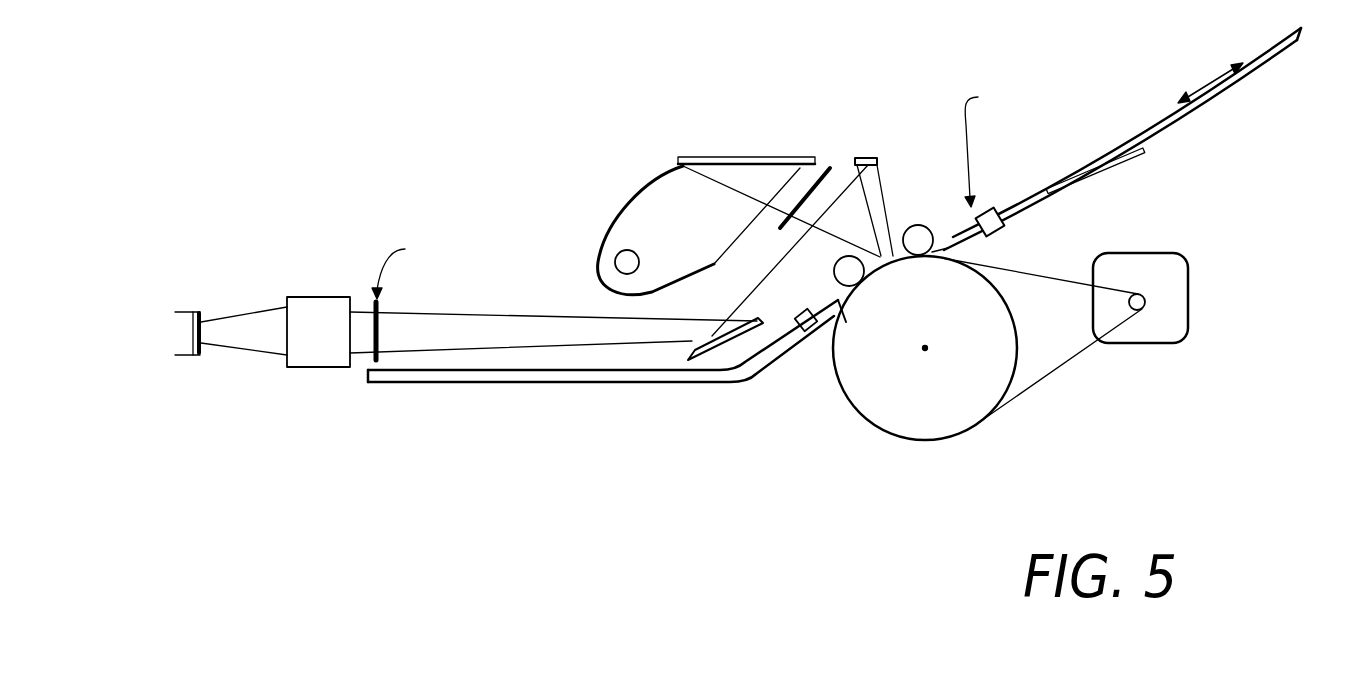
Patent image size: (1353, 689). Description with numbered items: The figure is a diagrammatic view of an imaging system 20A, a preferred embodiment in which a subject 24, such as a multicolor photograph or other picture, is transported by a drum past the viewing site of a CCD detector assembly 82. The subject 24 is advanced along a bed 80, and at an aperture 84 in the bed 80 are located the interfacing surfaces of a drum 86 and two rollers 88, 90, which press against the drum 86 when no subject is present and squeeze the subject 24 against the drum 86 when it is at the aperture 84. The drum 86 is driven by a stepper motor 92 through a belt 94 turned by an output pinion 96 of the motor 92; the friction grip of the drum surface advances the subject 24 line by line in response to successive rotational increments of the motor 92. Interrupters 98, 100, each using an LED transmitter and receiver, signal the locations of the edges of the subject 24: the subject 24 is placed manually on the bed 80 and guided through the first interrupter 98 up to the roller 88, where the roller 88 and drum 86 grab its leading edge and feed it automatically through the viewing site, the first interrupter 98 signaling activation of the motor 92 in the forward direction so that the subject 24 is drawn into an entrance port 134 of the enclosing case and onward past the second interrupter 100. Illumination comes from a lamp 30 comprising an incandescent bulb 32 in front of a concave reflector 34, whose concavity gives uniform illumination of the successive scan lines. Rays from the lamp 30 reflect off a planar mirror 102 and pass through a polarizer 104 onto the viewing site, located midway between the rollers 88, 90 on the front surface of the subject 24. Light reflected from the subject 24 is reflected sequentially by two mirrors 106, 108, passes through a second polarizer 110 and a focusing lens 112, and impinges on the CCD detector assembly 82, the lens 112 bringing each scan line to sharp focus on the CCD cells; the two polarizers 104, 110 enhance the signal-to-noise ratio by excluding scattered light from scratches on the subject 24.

The imaging system 20A is at (549, 167).
The subject 24 is at (1123, 146).
The lamp 30 is at (625, 230).
The incandescent bulb 32 is at (606, 239).
The concave reflector 34 is at (640, 193).
The bed 80 is at (598, 383).
The CCD detector assembly 82 is at (196, 357).
The aperture 84 is at (950, 246).
The drum 86 is at (1020, 347).
The roller 88 is at (930, 226).
The roller 90 is at (836, 276).
The stepper motor 92 is at (1152, 344).
The belt 94 is at (1032, 390).
The output pinion 96 is at (1146, 296).
The interrupter 98 is at (981, 208).
The interrupter 100 is at (812, 332).
The planar mirror 102 is at (684, 157).
The polarizer 104 is at (836, 170).
The mirror 106 is at (868, 157).
The mirror 108 is at (750, 365).
The second polarizer 110 is at (380, 336).
The focusing lens 112 is at (320, 368).
The entrance port 134 is at (1147, 154).